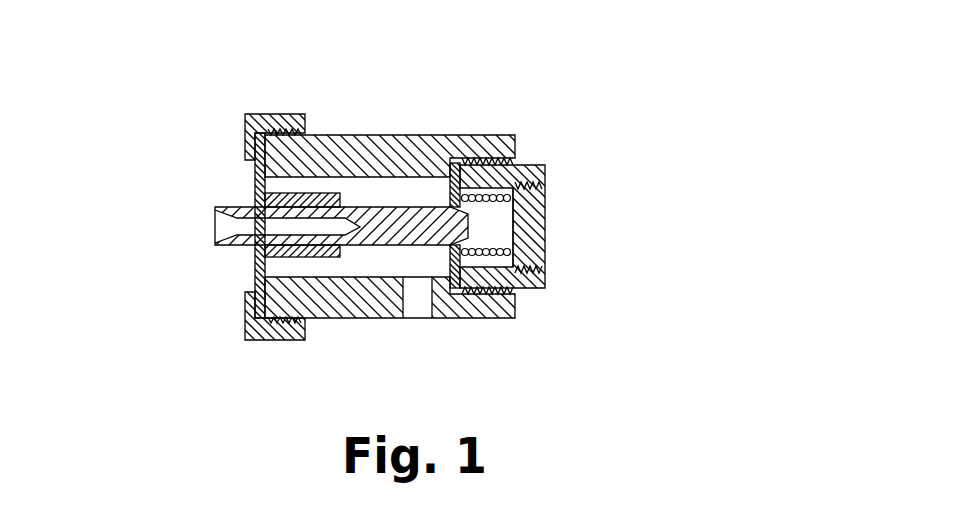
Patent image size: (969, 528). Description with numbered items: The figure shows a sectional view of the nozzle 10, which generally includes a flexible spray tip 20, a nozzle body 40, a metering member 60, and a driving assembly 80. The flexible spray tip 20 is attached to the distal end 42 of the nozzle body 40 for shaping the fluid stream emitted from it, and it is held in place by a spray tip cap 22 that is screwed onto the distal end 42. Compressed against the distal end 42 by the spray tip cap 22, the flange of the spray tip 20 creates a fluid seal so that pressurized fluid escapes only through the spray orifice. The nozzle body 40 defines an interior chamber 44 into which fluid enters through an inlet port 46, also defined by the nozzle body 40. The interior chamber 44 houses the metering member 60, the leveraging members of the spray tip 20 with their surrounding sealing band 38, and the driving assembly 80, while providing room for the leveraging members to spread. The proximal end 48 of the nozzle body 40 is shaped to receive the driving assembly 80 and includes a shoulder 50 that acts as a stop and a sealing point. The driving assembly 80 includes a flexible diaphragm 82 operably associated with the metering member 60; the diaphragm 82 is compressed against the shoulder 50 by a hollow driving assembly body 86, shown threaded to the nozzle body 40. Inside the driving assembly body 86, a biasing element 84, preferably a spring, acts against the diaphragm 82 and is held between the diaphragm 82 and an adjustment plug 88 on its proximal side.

The nozzle 10 is at (165, 80).
The flexible spray tip 20 is at (250, 203).
The spray tip cap 22 is at (258, 113).
The sealing band 38 is at (338, 193).
The nozzle body 40 is at (436, 128).
The distal end 42 is at (253, 278).
The interior chamber 44 is at (357, 267).
The inlet port 46 is at (412, 310).
The proximal end 48 is at (358, 150).
The shoulder 50 is at (460, 168).
The metering member 60 is at (396, 200).
The driving assembly 80 is at (501, 222).
The flexible diaphragm 82 is at (462, 315).
The biasing element 84 is at (493, 186).
The driving assembly body 86 is at (546, 275).
The adjustment plug 88 is at (533, 228).